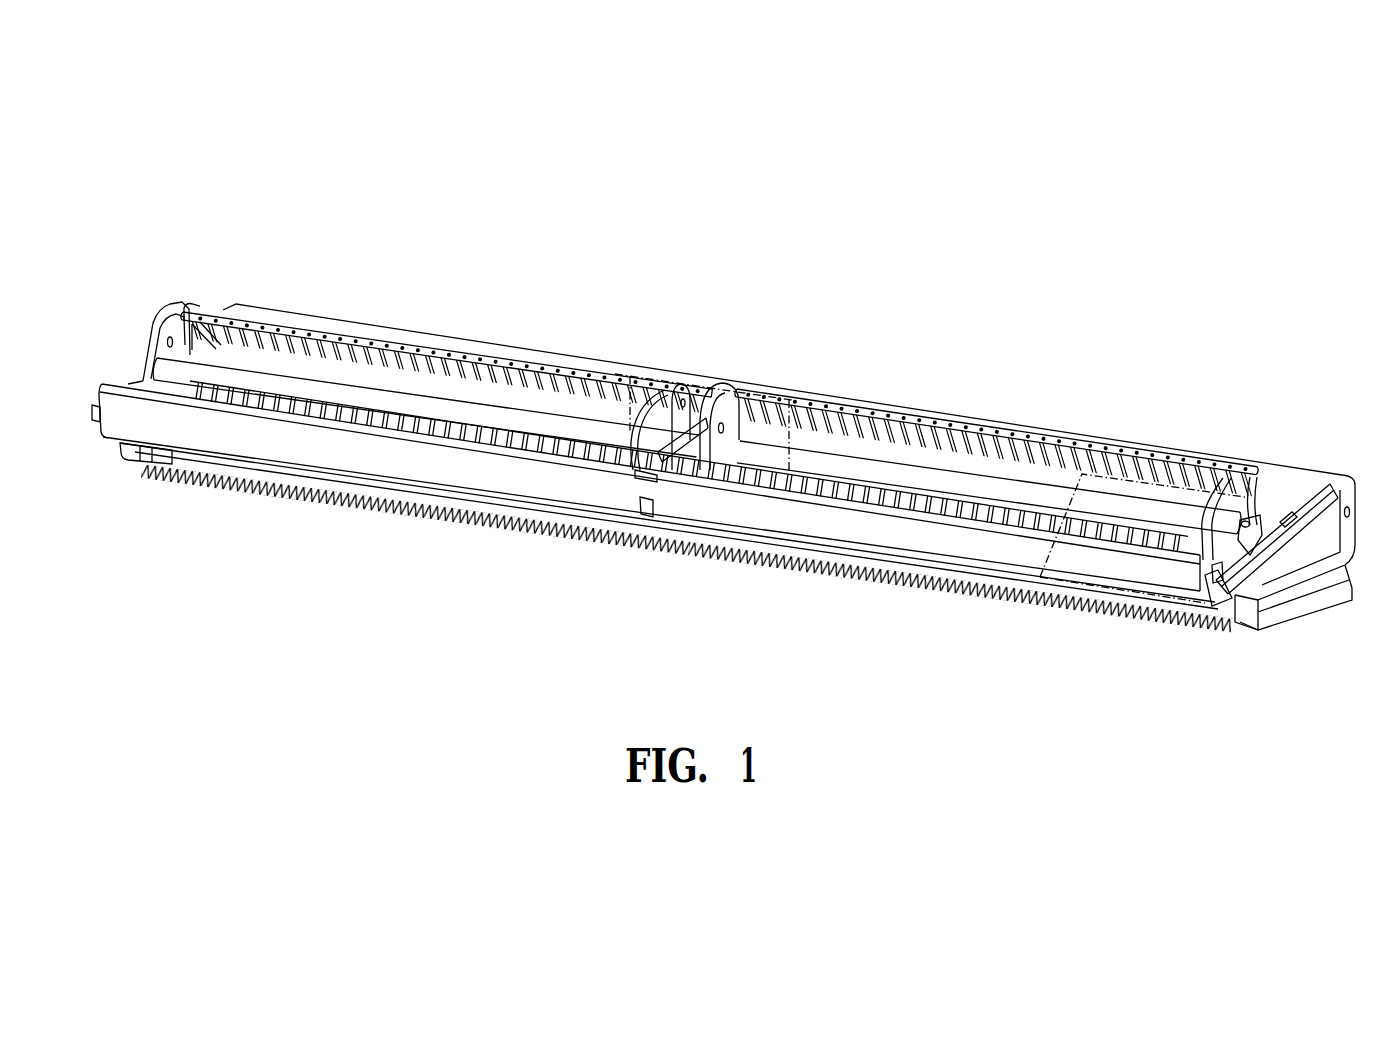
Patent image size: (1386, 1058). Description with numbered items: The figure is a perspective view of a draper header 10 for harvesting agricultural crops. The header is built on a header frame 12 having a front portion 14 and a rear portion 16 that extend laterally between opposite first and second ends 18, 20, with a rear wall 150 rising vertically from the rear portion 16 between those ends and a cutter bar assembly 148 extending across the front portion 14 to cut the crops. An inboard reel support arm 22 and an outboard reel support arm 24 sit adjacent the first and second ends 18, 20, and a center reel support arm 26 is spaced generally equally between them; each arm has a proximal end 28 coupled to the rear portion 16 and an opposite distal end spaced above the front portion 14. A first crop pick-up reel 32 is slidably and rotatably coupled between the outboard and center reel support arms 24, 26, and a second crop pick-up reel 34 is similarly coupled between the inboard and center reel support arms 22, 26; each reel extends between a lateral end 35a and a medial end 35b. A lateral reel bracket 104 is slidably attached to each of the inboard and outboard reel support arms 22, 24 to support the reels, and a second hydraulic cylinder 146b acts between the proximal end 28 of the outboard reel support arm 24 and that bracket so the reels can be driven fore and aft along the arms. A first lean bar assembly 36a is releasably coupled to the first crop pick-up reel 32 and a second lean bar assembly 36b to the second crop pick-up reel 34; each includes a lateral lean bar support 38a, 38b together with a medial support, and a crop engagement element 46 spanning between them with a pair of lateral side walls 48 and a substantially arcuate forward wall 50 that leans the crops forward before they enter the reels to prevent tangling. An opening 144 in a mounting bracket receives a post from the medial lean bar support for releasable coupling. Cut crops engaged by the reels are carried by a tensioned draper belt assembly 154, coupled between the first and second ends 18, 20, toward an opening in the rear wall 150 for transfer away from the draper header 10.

The draper header 10 is at (390, 246).
The header frame 12 is at (1084, 381).
The front portion 14 is at (1250, 634).
The rear portion 16 is at (1272, 493).
The first end 18 is at (1278, 625).
The second end 20 is at (128, 463).
The inboard reel support arm 22 is at (1270, 550).
The outboard reel support arm 24 is at (197, 307).
The center reel support arm 26 is at (681, 465).
The proximal end 28 is at (645, 462).
The first crop pick-up reel 32 is at (508, 362).
The second crop pick-up reel 34 is at (958, 427).
The lateral end 35a is at (165, 306).
The medial end 35b is at (723, 397).
The first lean bar assembly 36a is at (447, 482).
The second lean bar assembly 36b is at (988, 574).
The lateral lean bar support 38a is at (95, 425).
The lateral lean bar support 38b is at (1216, 582).
The crop engagement element 46 is at (840, 556).
The lateral side walls 48 is at (1212, 600).
The arcuate forward wall 50 is at (305, 450).
The lateral reel bracket 104 is at (1260, 612).
The opening 144 is at (777, 378).
The second hydraulic cylinder 146b is at (1292, 514).
The cutter bar assembly 148 is at (383, 510).
The rear wall 150 is at (1241, 459).
The tensioned draper belt assembly 154 is at (1158, 600).